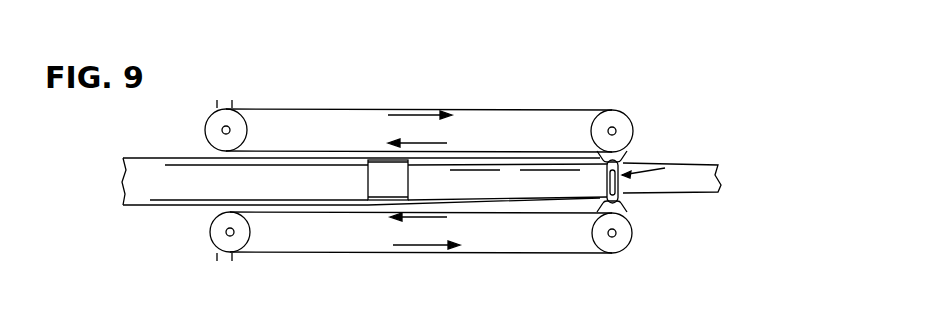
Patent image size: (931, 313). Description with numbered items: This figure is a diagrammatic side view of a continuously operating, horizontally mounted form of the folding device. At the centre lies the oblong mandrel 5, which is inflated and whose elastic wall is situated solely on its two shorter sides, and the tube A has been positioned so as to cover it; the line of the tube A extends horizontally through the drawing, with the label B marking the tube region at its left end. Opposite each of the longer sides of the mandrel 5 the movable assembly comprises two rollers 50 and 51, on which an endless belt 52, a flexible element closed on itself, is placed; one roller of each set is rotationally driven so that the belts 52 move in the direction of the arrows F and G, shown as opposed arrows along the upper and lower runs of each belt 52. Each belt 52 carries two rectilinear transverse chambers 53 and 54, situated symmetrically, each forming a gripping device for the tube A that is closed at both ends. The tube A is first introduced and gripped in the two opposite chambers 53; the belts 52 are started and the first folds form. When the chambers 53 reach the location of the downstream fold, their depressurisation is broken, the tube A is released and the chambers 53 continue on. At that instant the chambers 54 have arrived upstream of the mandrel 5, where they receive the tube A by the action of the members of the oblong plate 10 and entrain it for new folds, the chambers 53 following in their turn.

The mandrel 5 is at (381, 198).
The plate 10 is at (655, 165).
The roller 50 is at (212, 122).
The roller 51 is at (612, 126).
The endless belt 52 is at (305, 108).
The chamber 53 is at (622, 160).
The chamber 54 is at (236, 104).
The tube A is at (520, 163).
The tube B is at (121, 190).
The arrow F is at (410, 141).
The arrow G is at (421, 114).